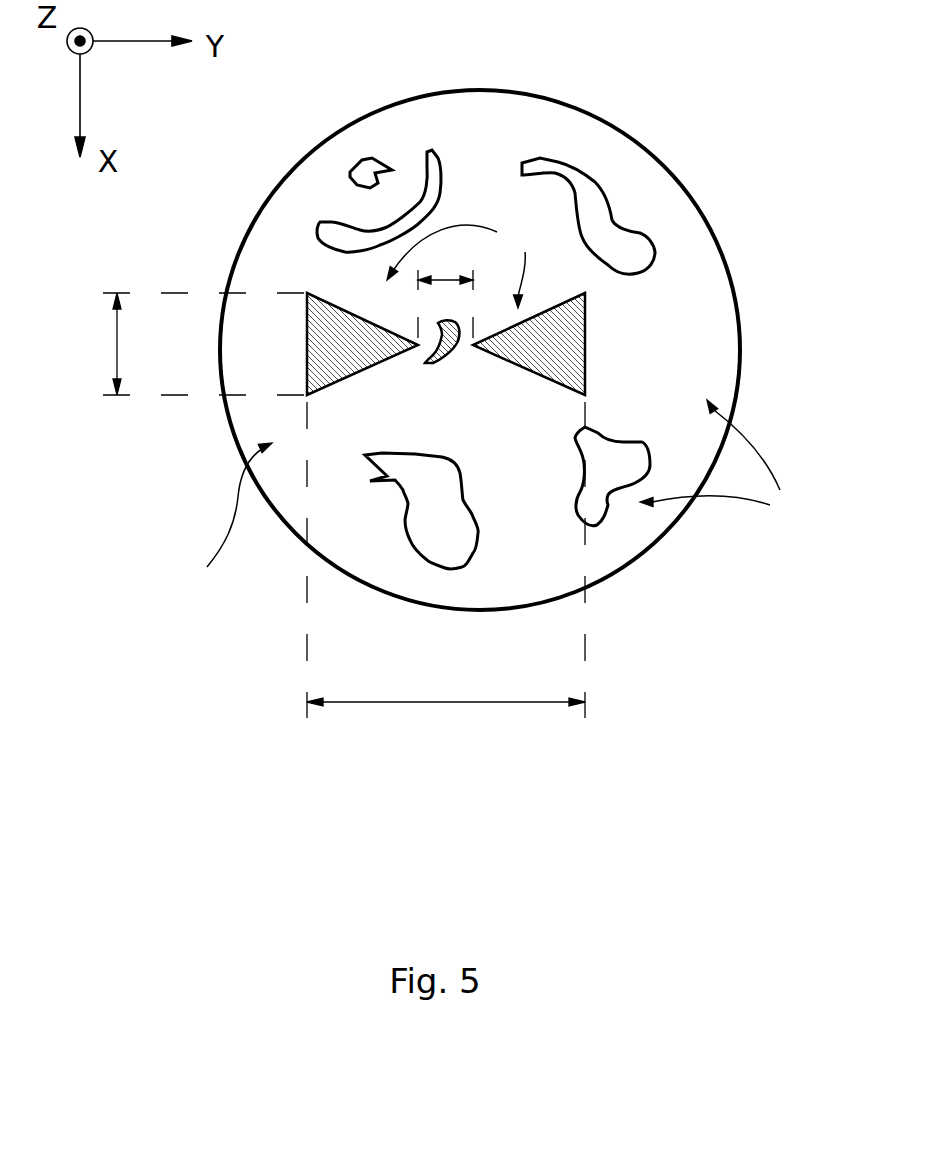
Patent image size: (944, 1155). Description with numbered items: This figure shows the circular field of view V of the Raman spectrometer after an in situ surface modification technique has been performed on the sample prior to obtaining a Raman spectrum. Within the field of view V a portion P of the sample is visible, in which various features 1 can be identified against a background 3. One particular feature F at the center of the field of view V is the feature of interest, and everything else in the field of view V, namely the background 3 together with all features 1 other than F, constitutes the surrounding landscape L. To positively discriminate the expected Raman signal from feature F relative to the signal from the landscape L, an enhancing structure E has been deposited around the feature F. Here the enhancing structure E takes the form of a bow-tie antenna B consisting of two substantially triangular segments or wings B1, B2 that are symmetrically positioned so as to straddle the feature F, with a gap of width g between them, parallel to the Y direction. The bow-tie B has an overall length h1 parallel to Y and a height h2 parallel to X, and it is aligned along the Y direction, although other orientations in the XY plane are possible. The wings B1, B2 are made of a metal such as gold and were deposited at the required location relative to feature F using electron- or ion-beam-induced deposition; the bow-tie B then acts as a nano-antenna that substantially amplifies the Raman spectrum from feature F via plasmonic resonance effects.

The background 3 is at (477, 110).
The features 1 is at (593, 207).
The portion of the sample P is at (262, 268).
The field of view V is at (713, 235).
The bow-tie antenna B is at (561, 362).
The first segment/wing B1 is at (330, 370).
The second segment/wing B2 is at (575, 370).
The feature F is at (447, 352).
The landscape L is at (497, 498).
The enhancing structure E is at (456, 260).
The gap width g is at (445, 284).
The bow-tie length h1 is at (446, 560).
The bow-tie height h2 is at (205, 344).